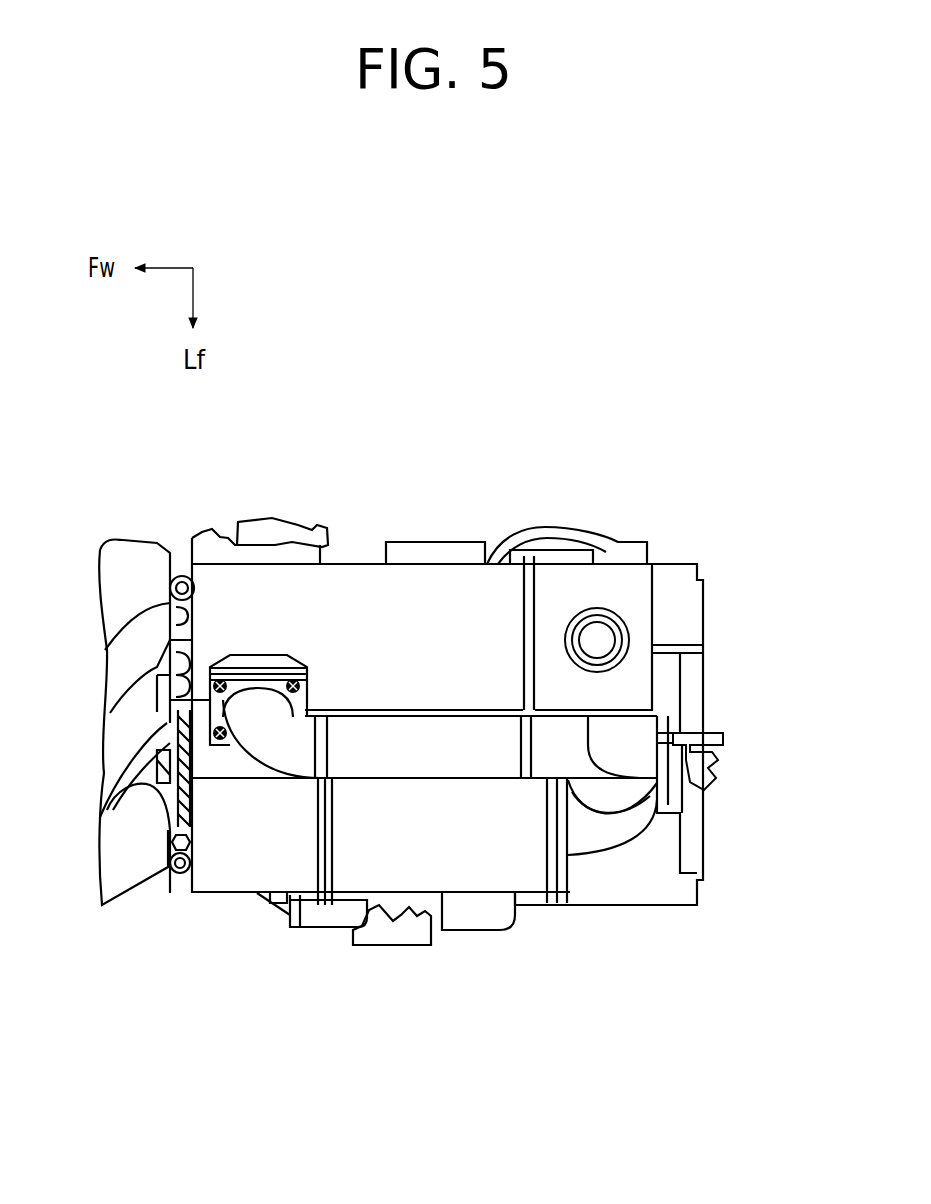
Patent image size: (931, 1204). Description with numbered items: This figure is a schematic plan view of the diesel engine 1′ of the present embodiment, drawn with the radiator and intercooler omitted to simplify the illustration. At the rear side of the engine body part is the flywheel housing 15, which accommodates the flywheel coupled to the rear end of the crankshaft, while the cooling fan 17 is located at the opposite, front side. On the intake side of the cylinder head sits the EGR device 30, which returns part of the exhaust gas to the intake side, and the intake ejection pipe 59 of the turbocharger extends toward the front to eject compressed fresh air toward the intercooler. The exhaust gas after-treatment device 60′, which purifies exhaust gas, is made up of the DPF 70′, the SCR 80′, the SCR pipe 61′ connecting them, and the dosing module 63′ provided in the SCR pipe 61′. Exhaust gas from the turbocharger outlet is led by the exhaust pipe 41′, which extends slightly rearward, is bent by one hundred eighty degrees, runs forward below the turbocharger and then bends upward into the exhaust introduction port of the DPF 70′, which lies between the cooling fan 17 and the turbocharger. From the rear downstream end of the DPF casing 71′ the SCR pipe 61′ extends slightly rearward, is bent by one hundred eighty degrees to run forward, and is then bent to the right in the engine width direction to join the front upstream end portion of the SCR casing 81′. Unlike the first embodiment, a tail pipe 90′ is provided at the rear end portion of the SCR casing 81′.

The diesel engine 1′ is at (452, 520).
The flywheel housing 15 is at (706, 818).
The cooling fan 17 is at (131, 855).
The EGR device 30 is at (557, 555).
The exhaust pipe 41′ is at (489, 922).
The intake ejection pipe 59 is at (304, 915).
The exhaust gas after-treatment device (ATD) 60′ is at (428, 866).
The SCR pipe 61′ is at (266, 740).
The dosing module 63′ is at (688, 742).
The DPF 70′ is at (424, 848).
The DPF casing 71′ is at (494, 856).
The SCR 80′ is at (419, 597).
The SCR casing 81′ is at (352, 583).
The tail pipe 90′ is at (618, 612).